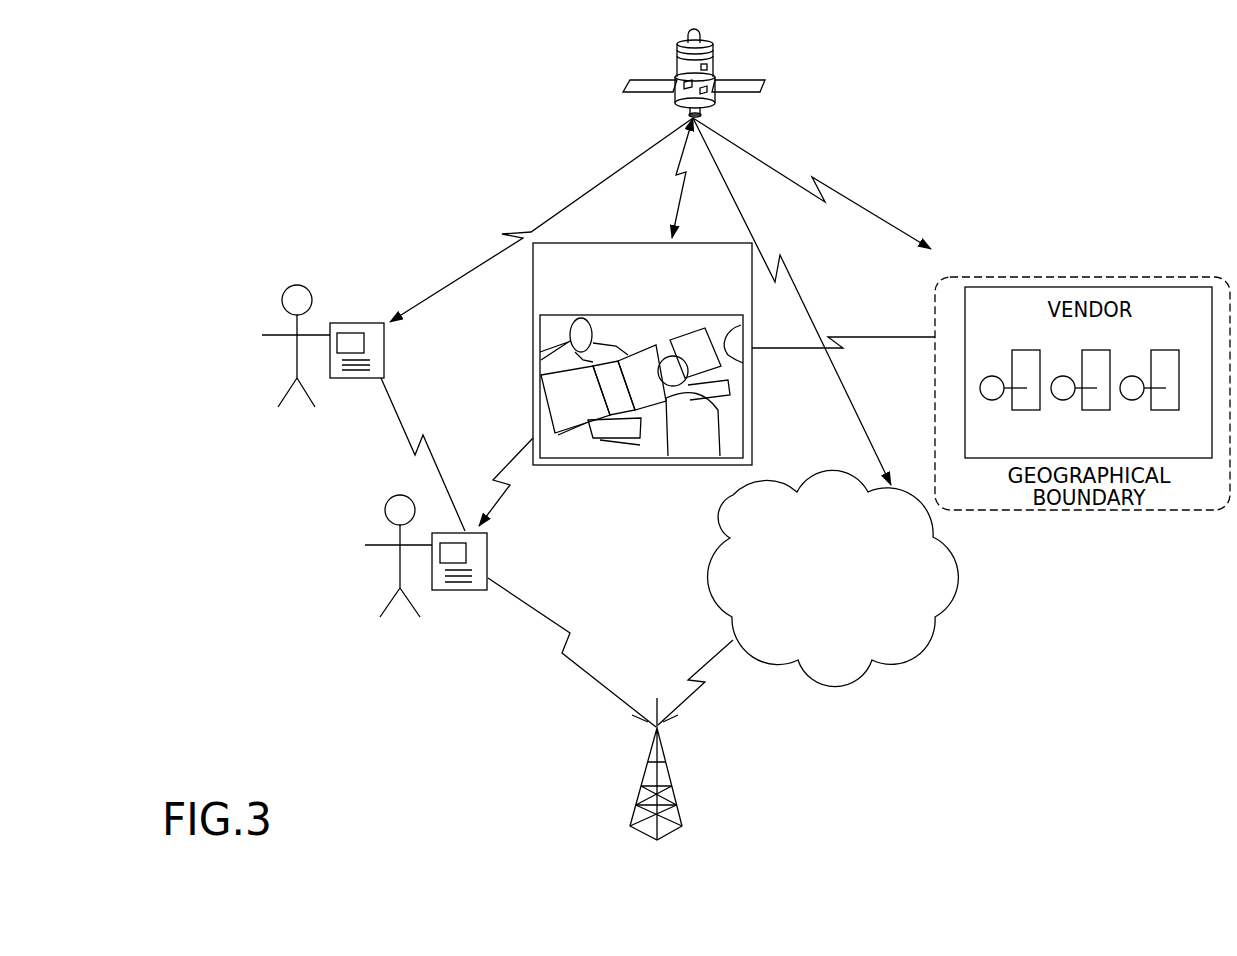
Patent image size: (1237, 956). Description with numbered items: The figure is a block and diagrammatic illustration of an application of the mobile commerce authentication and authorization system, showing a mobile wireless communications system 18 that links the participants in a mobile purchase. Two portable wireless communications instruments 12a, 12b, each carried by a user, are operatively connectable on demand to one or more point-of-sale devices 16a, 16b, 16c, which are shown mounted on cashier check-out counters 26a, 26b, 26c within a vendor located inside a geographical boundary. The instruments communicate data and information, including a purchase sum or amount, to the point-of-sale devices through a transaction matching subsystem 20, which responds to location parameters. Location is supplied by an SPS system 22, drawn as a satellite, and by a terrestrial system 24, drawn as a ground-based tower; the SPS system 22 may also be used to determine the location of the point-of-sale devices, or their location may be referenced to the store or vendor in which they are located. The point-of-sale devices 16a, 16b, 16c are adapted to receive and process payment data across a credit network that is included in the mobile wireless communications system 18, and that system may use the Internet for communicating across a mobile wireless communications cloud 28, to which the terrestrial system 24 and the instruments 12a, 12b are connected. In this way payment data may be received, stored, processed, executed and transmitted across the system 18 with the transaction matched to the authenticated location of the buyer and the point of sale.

The mobile wireless communications system 18 is at (303, 155).
The SPS system 22 is at (715, 58).
The portable wireless communications instrument 12a is at (384, 355).
The portable wireless communications instrument 12b is at (487, 562).
The transaction matching subsystem 20 is at (585, 465).
The terrestrial system 24 is at (670, 777).
The mobile wireless communications cloud 28 is at (888, 665).
The cashier check-out counter 26a is at (1018, 350).
The cashier check-out counter 26b is at (1093, 350).
The cashier check-out counter 26c is at (1157, 350).
The point-of-sale device 16a is at (988, 399).
The point-of-sale device 16b is at (1058, 399).
The point-of-sale device 16c is at (1127, 399).